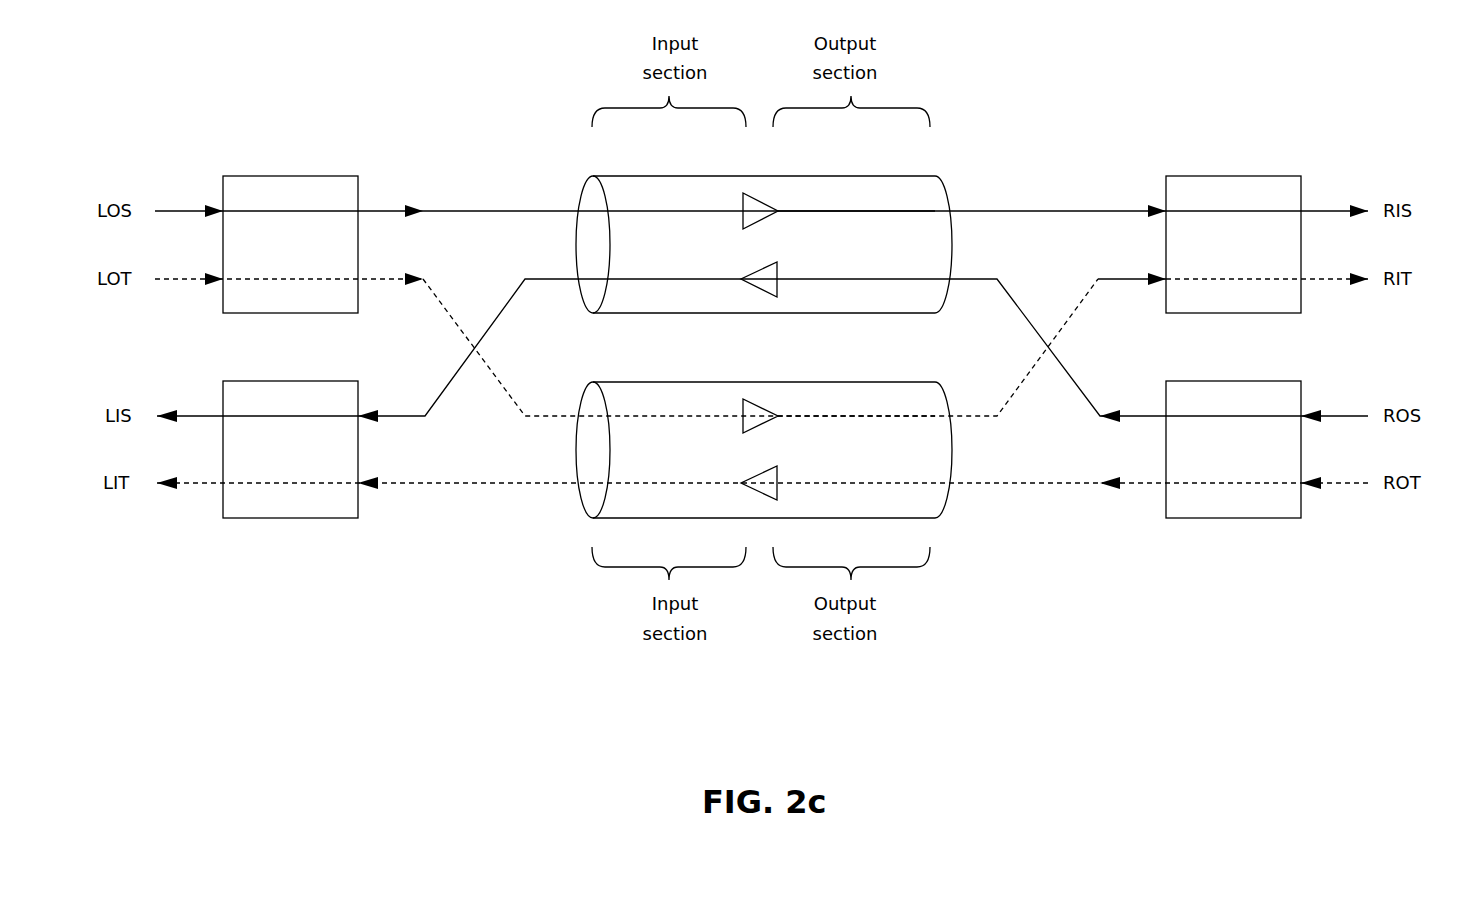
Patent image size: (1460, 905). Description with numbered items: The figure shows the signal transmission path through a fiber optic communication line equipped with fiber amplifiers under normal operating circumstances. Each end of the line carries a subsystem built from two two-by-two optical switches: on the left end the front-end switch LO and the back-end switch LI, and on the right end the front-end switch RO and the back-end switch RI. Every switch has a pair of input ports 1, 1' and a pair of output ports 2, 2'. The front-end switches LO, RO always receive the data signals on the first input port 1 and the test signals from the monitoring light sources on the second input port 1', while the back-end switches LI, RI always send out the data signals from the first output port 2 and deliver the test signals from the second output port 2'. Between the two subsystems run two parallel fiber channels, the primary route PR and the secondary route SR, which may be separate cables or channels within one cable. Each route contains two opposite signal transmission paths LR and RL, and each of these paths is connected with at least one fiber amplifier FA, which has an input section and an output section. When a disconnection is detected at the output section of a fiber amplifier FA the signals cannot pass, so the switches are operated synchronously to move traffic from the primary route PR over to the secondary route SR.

The front-end switch LO is at (270, 176).
The back-end switch LI is at (270, 381).
The back-end switch RI is at (1233, 176).
The front-end switch RO is at (1233, 381).
The primary route PR is at (760, 176).
The secondary route SR is at (760, 382).
The fiber amplifier FA is at (750, 226).
The signal transmission path RL is at (665, 279).
The signal transmission path LR is at (795, 211).
The first input port 1 is at (761, 298).
The first output port 2 is at (758, 298).
The second input port 1' is at (762, 365).
The second output port 2' is at (761, 365).